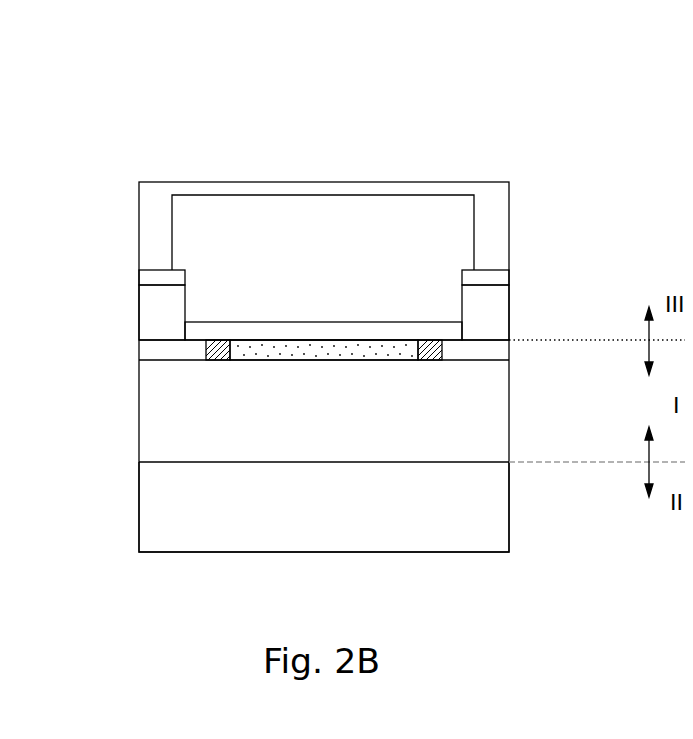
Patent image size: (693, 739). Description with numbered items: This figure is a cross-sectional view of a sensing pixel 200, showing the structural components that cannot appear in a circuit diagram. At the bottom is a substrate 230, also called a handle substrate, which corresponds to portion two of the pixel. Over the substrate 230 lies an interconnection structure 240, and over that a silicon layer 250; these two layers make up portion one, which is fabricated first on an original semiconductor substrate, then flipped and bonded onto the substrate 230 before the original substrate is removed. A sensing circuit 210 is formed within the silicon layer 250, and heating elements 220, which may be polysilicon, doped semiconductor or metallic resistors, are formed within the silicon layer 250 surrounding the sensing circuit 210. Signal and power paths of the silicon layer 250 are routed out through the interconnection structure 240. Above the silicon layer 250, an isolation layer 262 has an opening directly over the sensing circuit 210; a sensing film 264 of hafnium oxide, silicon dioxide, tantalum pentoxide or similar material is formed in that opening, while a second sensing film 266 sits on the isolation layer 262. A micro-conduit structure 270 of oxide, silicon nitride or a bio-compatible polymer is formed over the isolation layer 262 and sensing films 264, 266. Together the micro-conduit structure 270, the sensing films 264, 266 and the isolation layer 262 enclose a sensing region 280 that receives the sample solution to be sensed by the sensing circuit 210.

The sensing pixel 200 is at (512, 122).
The sensing circuit 210 is at (380, 362).
The heating elements 220 is at (207, 360).
The substrate 230 is at (343, 519).
The interconnection structure 240 is at (343, 422).
The silicon layer 250 is at (527, 345).
The isolation layer 262 is at (147, 330).
The sensing film 264 is at (273, 330).
The sensing film 266 is at (147, 280).
The micro-conduit structure 270 is at (147, 218).
The sensing region 280 is at (345, 272).